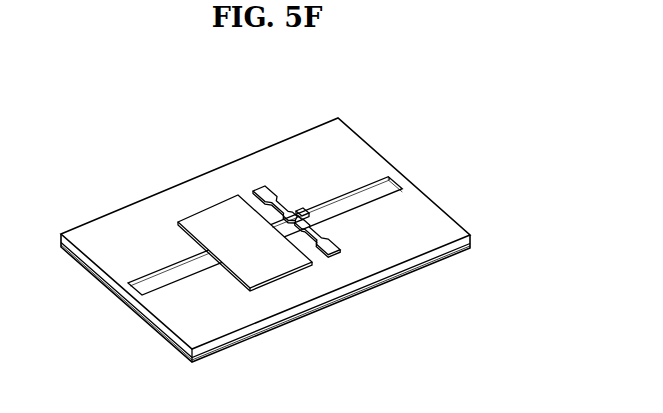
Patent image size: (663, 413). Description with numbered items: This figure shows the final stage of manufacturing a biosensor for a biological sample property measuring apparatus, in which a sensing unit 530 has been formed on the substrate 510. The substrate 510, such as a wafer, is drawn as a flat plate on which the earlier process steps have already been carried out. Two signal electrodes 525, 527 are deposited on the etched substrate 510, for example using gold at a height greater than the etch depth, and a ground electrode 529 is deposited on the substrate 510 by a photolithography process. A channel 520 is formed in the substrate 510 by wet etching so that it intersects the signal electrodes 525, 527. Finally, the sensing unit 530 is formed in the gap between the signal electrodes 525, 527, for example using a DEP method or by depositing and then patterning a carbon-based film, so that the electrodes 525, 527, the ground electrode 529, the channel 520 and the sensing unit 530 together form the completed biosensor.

The substrate 510 is at (200, 175).
The channel 520 is at (383, 190).
The signal electrode 525 is at (262, 191).
The signal electrode 527 is at (338, 251).
The ground electrode 529 is at (265, 258).
The sensing unit 530 is at (302, 212).